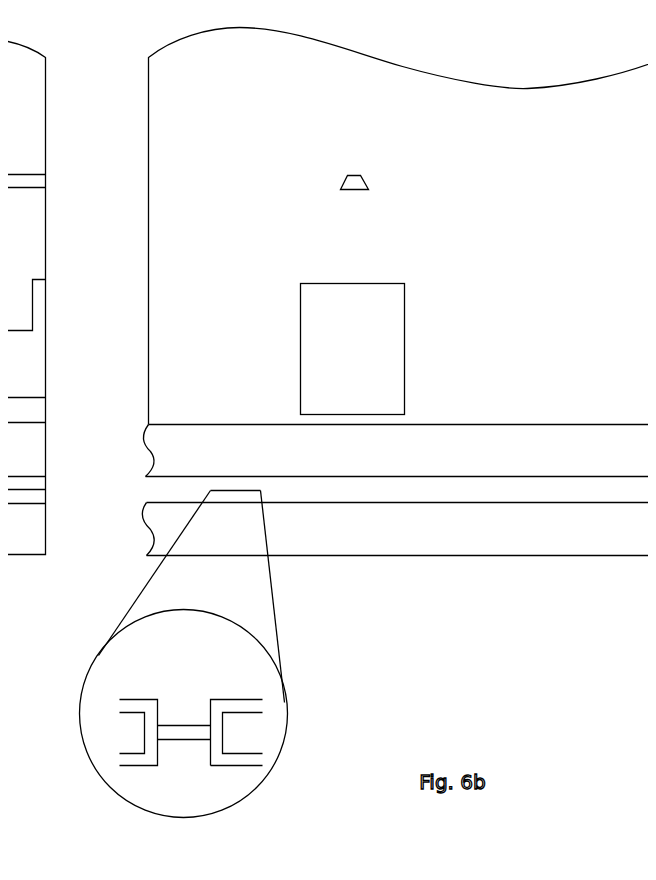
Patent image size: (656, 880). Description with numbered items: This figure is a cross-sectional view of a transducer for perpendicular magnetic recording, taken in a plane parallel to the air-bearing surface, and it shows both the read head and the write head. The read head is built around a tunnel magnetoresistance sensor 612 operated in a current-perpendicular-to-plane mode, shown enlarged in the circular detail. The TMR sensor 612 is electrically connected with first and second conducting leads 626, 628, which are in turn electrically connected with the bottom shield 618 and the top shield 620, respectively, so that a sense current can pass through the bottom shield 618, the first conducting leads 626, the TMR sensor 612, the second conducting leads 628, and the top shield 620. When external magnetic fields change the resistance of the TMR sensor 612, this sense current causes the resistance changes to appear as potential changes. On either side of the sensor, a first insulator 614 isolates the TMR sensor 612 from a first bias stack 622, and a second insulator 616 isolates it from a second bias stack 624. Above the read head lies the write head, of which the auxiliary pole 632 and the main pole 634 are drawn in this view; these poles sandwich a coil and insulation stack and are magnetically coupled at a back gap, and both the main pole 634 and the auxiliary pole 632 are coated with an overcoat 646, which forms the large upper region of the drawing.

The tunnel magnetoresistance (TMR) sensor 612 is at (182, 730).
The first insulator 614 is at (126, 756).
The second insulator 616 is at (250, 757).
The bottom shield 618 is at (395, 529).
The top shield 620 is at (395, 451).
The first bias stack 622 is at (130, 738).
The second bias stack 624 is at (233, 737).
The first conducting leads 626 is at (187, 752).
The second conducting leads 628 is at (185, 706).
The auxiliary pole 632 is at (206, 347).
The main pole 634 is at (343, 182).
The overcoat 646 is at (399, 226).